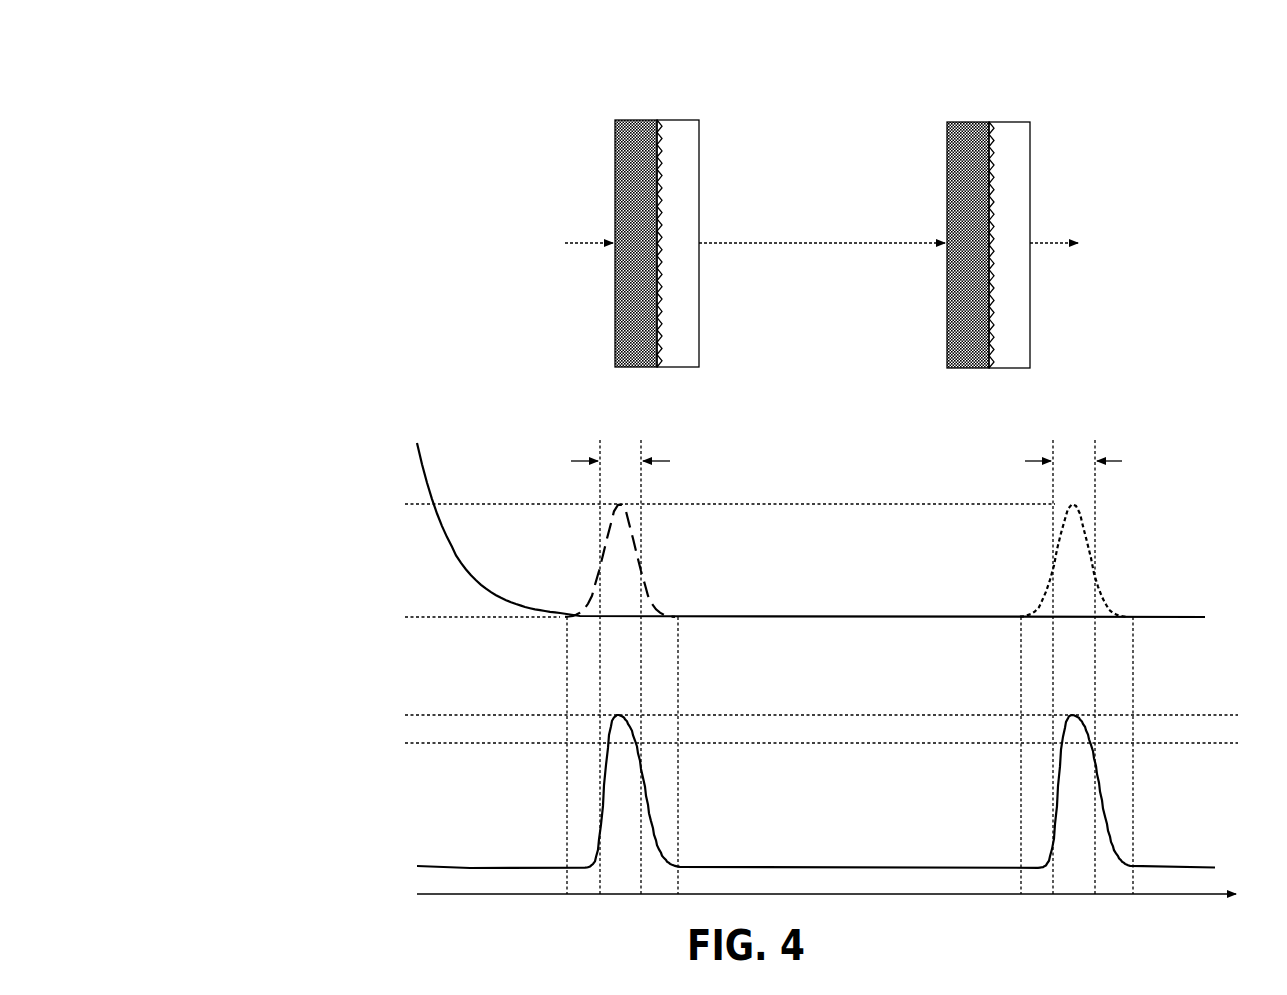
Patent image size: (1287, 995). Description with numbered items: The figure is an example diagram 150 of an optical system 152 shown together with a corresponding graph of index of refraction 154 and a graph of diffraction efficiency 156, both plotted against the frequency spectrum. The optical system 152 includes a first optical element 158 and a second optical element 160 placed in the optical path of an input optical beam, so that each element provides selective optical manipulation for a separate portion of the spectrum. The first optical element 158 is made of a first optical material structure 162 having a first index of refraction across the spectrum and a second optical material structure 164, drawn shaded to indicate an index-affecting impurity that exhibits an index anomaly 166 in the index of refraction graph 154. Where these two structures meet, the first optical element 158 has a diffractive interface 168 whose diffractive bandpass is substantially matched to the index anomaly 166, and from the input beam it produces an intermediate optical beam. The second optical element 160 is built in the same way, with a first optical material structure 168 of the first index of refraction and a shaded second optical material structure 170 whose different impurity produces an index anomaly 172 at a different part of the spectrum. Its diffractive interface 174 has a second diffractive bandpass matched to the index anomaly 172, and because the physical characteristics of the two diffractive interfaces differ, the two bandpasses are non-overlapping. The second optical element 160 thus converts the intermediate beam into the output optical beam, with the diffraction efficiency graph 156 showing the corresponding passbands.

The diagram 150 is at (268, 102).
The optical system 152 is at (657, 76).
The index of refraction graph 154 is at (708, 524).
The diffraction efficiency graph 156 is at (731, 810).
The first optical element 158 is at (592, 166).
The second optical element 160 is at (928, 168).
The first optical material structure 162 is at (615, 298).
The second optical material structure 164 is at (699, 298).
The index anomaly 166 is at (660, 558).
The diffractive interface 168 is at (674, 207).
The second optical material structure 170 is at (1030, 298).
The index anomaly 172 is at (1110, 551).
The diffractive interface 174 is at (1005, 207).